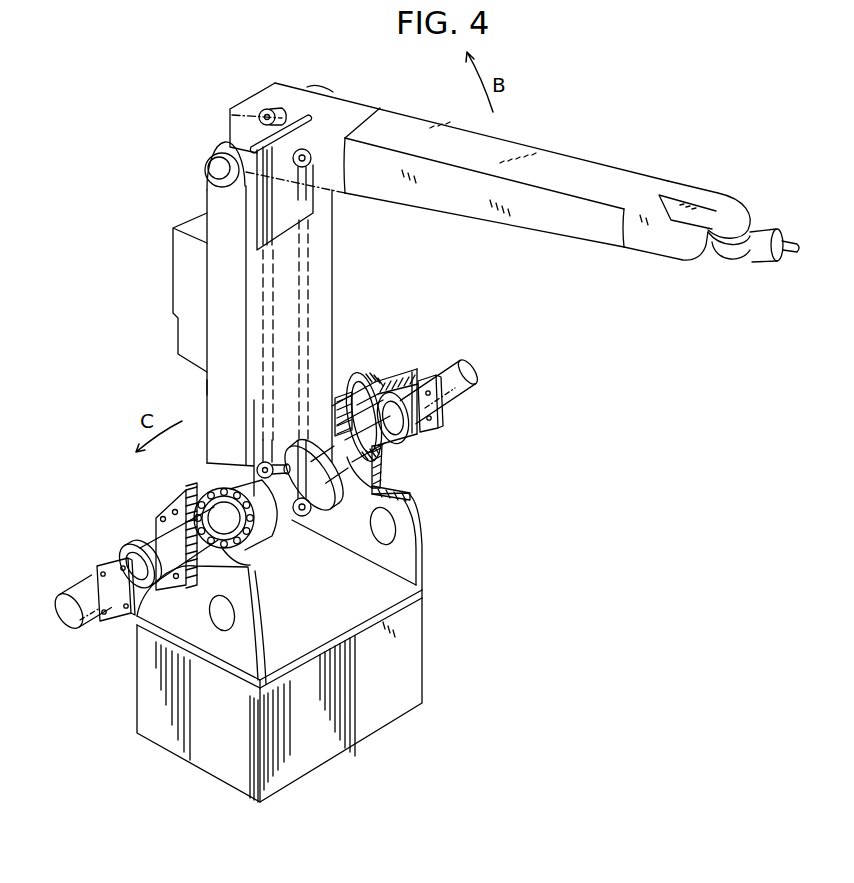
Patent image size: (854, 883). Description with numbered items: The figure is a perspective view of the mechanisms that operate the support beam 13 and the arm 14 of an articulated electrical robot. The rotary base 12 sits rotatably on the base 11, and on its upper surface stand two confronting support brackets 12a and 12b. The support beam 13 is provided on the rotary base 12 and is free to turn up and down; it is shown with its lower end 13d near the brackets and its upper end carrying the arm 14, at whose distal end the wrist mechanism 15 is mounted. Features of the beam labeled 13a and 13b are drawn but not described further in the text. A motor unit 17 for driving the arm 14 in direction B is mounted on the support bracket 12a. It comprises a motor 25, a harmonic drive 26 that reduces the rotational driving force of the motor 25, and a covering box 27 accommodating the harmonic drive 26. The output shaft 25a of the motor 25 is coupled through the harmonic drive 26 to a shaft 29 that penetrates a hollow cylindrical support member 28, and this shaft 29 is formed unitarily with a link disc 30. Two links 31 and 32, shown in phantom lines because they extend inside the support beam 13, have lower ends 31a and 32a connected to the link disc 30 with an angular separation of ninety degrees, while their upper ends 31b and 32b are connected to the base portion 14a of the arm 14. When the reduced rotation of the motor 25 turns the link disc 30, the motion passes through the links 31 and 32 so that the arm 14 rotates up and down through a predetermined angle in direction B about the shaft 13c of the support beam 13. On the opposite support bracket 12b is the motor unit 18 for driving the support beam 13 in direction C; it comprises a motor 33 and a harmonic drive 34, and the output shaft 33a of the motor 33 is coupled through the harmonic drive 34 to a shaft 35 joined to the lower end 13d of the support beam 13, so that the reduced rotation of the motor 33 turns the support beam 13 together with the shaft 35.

The base 11 is at (148, 718).
The rotary base 12 is at (386, 598).
The support bracket 12a is at (424, 540).
The support bracket 12b is at (262, 634).
The support beam 13 is at (334, 259).
The column front face 13a is at (207, 387).
The column side bracket 13b is at (173, 286).
The shaft of the support beam 13c is at (252, 134).
The lower end of the support beam 13d is at (248, 560).
The arm 14 is at (531, 148).
The base portion of the arm 14a is at (296, 88).
The wrist mechanism 15 is at (707, 188).
The motor unit 17 is at (482, 365).
The motor unit 18 is at (83, 641).
The motor 25 is at (472, 388).
The output shaft of the motor 25a is at (438, 414).
The harmonic drive 26 is at (400, 443).
The covering box 27 is at (397, 374).
The hollow cylindrical support member 28 is at (355, 398).
The shaft 29 is at (382, 468).
The link disc 30 is at (322, 515).
The link 31 is at (310, 303).
The lower end of the link 31a is at (302, 517).
The upper end of the link 31b is at (312, 150).
The link 32 is at (262, 297).
The lower end of the link 32a is at (257, 466).
The upper end of the link 32b is at (262, 108).
The motor 33 is at (90, 610).
The output shaft of the motor 33a is at (126, 562).
The harmonic drive 34 is at (140, 545).
The shaft 35 is at (180, 525).